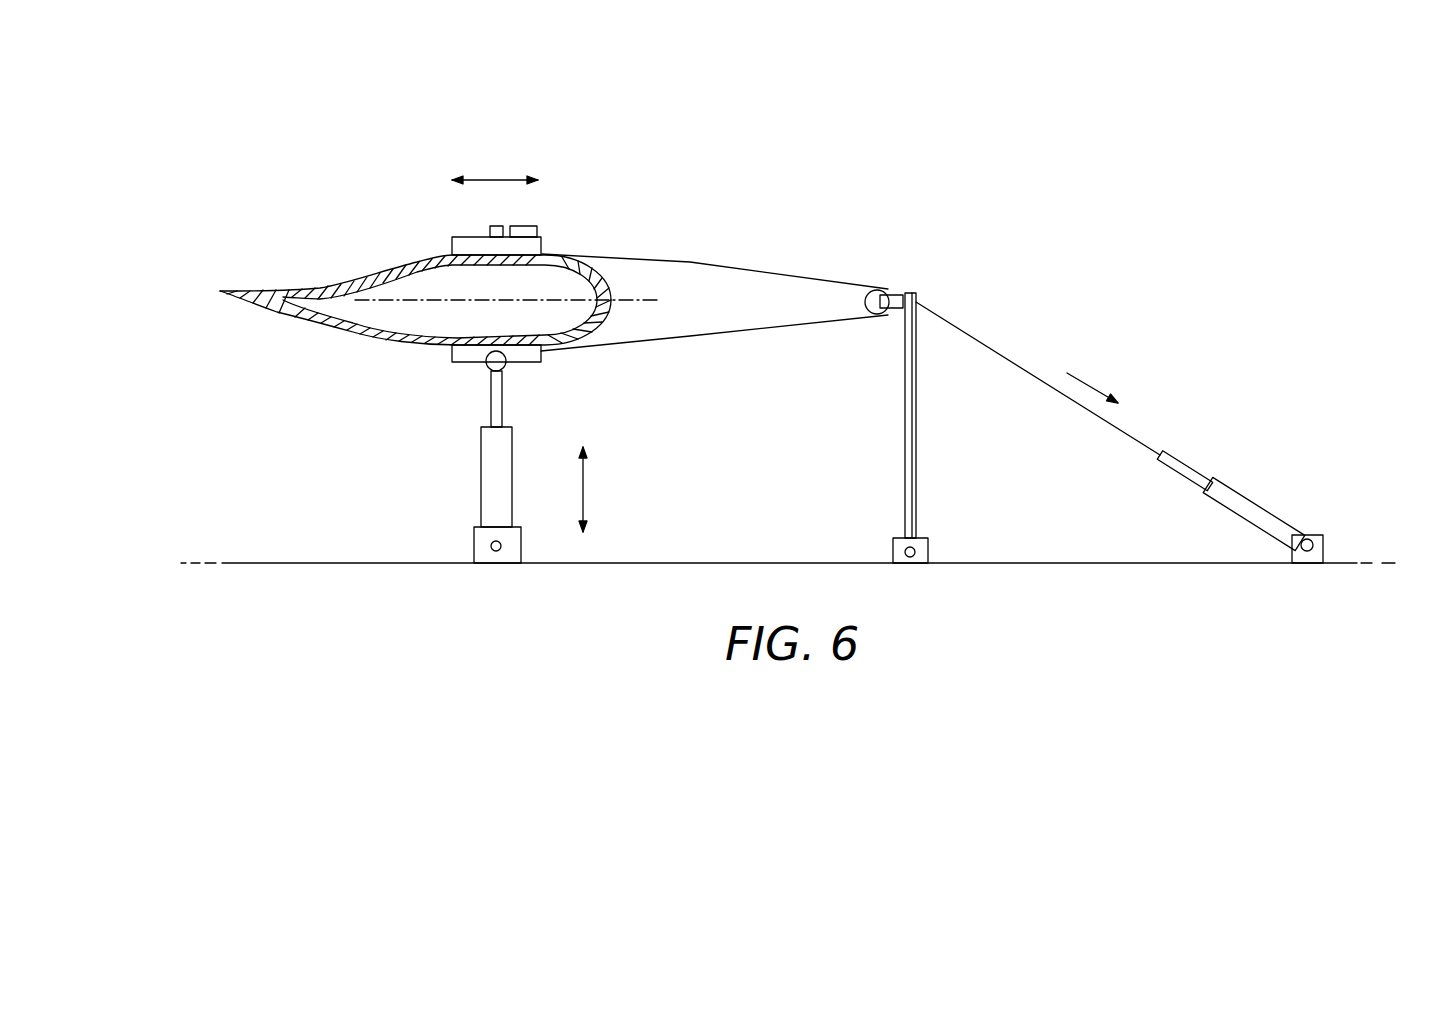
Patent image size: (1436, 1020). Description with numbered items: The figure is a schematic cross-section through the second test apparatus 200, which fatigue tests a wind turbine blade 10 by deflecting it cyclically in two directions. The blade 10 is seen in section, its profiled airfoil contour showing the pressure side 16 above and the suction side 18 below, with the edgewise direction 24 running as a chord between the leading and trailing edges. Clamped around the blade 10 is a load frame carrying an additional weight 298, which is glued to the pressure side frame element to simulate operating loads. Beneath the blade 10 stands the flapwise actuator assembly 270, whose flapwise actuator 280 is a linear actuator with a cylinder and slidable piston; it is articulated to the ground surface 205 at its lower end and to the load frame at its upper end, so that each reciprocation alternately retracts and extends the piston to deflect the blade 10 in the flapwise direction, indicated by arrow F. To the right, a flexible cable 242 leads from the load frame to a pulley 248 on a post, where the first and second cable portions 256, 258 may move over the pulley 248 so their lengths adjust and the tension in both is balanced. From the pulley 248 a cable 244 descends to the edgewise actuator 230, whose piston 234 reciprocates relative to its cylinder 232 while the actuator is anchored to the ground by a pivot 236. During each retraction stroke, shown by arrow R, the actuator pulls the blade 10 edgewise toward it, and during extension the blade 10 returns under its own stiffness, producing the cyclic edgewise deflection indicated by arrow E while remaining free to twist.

The second test apparatus 200 is at (897, 113).
The ground surface 205 is at (1140, 565).
The wind turbine blade 10 is at (318, 287).
The pressure side 16 is at (388, 272).
The suction side 18 is at (372, 338).
The edgewise direction 24 is at (624, 300).
The additional weight 298 is at (539, 231).
The flapwise actuator assembly 270 is at (421, 457).
The flapwise actuator 280 is at (466, 501).
The cable 242 is at (714, 302).
The first cable portion 256 is at (681, 262).
The second cable portion 258 is at (695, 338).
The pulley 248 is at (880, 317).
The cable 244 is at (1082, 408).
The edgewise actuator 230 is at (1240, 481).
The piston 234 is at (1180, 455).
The cylinder 232 is at (1302, 497).
The pivot 236 is at (1313, 545).